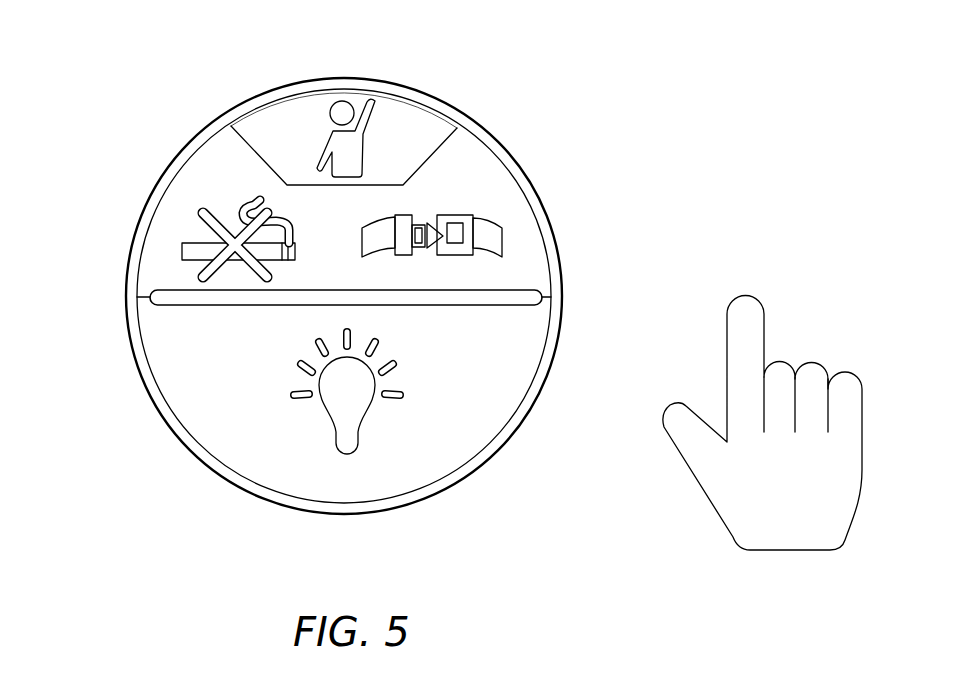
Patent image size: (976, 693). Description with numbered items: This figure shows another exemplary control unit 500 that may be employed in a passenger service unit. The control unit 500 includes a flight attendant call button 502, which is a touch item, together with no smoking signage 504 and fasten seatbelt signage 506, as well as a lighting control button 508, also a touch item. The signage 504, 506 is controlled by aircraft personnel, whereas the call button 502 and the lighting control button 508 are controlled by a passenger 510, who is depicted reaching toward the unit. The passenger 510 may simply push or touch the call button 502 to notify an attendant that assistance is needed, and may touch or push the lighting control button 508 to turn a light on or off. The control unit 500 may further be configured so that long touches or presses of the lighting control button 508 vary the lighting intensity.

The control unit 500 is at (430, 91).
The flight attendant call button 502 is at (403, 147).
The no smoking signage 504 is at (168, 253).
The fasten seatbelt signage 506 is at (518, 255).
The lighting control button 508 is at (371, 458).
The passenger 510 is at (764, 322).